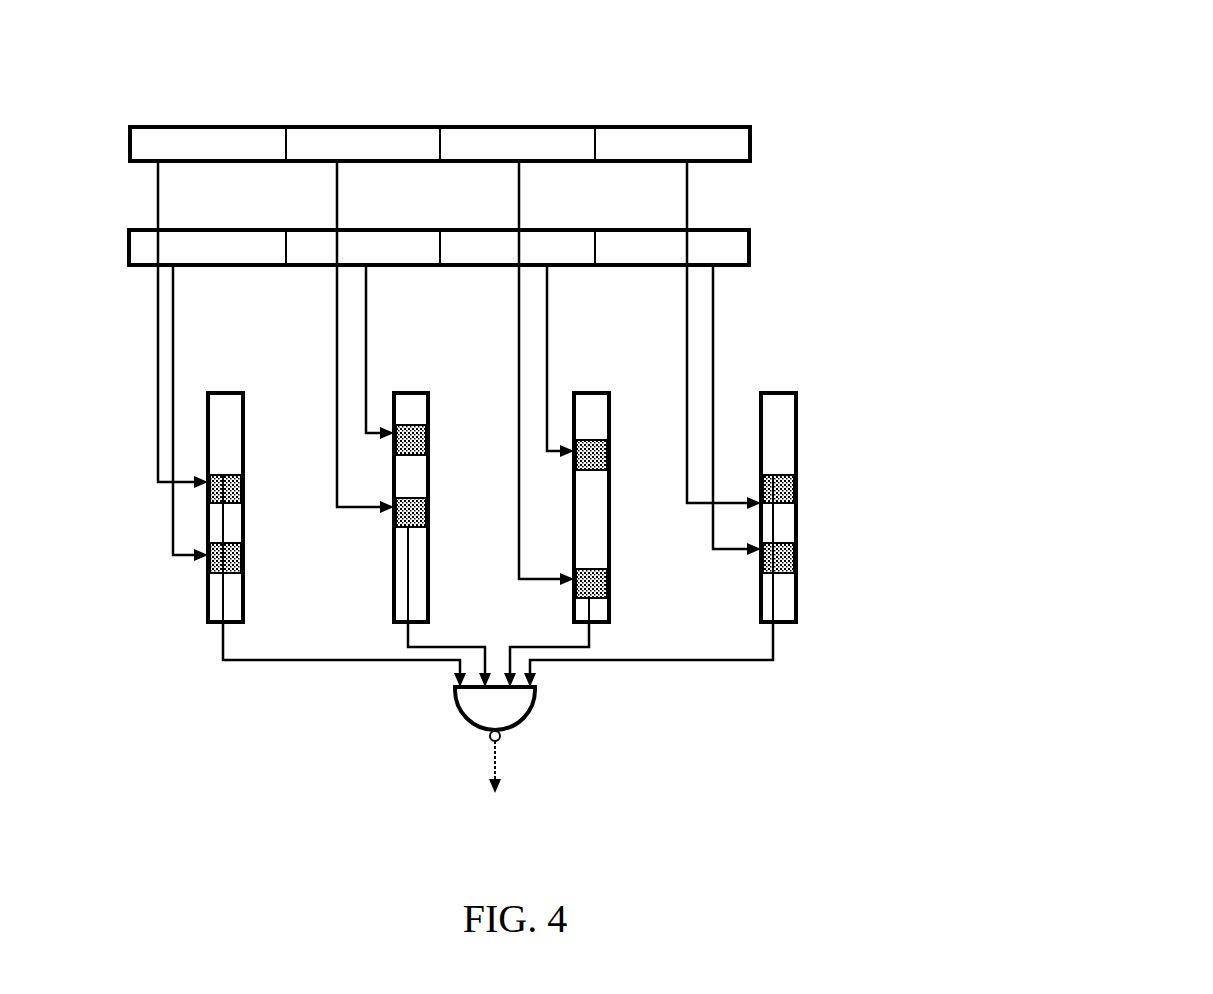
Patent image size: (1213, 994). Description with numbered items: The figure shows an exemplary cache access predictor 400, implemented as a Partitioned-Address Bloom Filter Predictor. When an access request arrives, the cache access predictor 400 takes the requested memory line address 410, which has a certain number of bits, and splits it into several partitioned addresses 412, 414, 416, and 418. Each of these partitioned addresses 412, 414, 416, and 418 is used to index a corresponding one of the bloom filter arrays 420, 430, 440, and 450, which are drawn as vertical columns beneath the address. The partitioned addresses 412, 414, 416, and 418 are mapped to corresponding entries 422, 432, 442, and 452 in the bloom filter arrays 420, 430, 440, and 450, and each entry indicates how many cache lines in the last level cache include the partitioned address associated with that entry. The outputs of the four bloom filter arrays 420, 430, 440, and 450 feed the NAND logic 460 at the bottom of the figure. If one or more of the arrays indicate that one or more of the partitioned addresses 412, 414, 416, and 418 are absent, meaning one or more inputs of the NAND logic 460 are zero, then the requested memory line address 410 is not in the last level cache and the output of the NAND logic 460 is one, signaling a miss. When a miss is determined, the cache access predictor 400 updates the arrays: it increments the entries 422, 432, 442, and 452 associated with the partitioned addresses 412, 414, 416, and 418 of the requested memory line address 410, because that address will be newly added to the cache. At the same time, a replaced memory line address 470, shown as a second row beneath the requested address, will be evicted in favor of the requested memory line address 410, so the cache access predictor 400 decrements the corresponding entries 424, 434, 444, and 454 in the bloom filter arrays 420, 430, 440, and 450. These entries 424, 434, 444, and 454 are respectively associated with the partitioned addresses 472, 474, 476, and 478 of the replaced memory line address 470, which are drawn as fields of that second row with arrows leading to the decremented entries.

The cache access predictor 400 is at (1142, 59).
The requested memory line address 410 is at (483, 126).
The partitioned address 412 is at (184, 157).
The partitioned address 414 is at (340, 157).
The partitioned address 416 is at (479, 157).
The partitioned address 418 is at (650, 157).
The replaced memory line address 470 is at (558, 229).
The partitioned address 472 is at (184, 260).
The partitioned address 474 is at (340, 260).
The partitioned address 476 is at (465, 260).
The partitioned address 478 is at (650, 260).
The bloom filter array 420 is at (229, 374).
The entry 422 is at (223, 473).
The entry 424 is at (245, 555).
The bloom filter array 430 is at (417, 377).
The entry 432 is at (418, 498).
The entry 434 is at (410, 425).
The bloom filter array 440 is at (592, 375).
The entry 442 is at (610, 582).
The entry 444 is at (590, 440).
The bloom filter array 450 is at (780, 377).
The entry 452 is at (785, 473).
The entry 454 is at (785, 543).
The NAND logic 460 is at (533, 705).